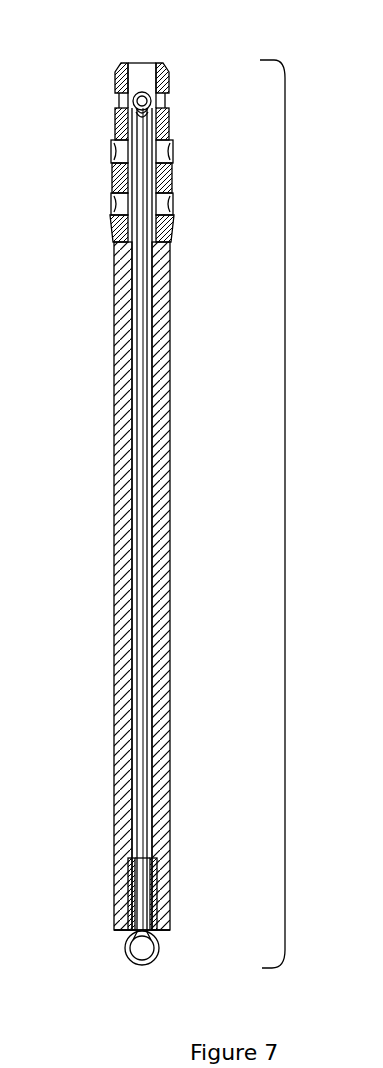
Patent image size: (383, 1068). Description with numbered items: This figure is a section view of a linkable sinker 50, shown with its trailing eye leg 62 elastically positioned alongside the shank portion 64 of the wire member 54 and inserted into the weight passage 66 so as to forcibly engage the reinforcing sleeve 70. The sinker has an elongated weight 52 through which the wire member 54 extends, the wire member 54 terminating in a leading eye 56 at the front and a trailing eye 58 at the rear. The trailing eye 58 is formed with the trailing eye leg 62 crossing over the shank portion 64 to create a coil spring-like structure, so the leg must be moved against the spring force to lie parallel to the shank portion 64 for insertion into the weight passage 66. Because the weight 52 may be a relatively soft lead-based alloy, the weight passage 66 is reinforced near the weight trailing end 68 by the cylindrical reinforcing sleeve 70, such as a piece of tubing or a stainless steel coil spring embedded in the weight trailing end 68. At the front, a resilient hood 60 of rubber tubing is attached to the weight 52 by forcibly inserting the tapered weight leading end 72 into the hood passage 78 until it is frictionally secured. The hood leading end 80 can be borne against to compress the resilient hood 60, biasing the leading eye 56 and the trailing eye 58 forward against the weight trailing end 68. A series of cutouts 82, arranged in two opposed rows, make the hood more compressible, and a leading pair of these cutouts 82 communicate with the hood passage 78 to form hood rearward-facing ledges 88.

The linkable sinker 50 is at (285, 512).
The elongated weight 52 is at (104, 442).
The wire member 54 is at (108, 258).
The leading eye 56 is at (150, 103).
The trailing eye 58 is at (112, 949).
The resilient hood 60 is at (180, 127).
The trailing eye leg 62 is at (135, 888).
The shank portion 64 is at (143, 835).
The weight passage 66 is at (138, 765).
The weight trailing end 68 is at (180, 925).
The reinforcing sleeve 70 is at (160, 873).
The weight leading end 72 is at (157, 258).
The hood passage 78 is at (118, 70).
The hood leading end 80 is at (139, 78).
The cutouts 82 is at (120, 200).
The hood rearward-facing ledges 88 is at (122, 103).